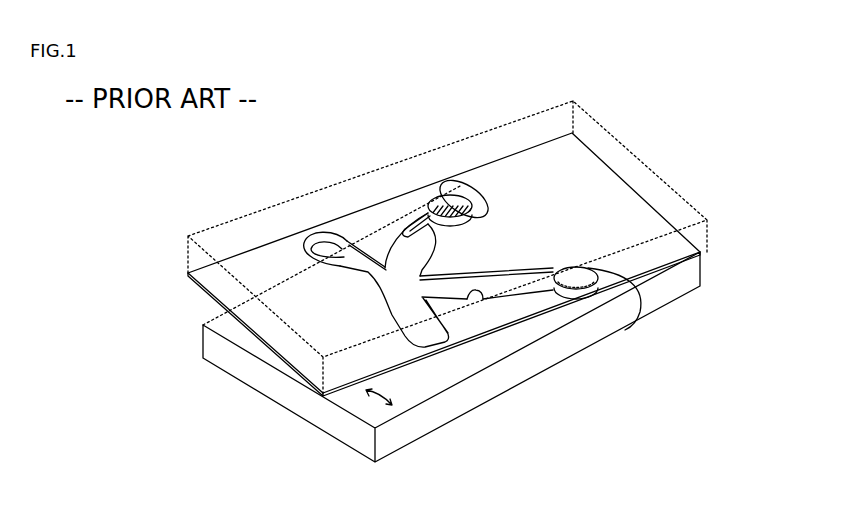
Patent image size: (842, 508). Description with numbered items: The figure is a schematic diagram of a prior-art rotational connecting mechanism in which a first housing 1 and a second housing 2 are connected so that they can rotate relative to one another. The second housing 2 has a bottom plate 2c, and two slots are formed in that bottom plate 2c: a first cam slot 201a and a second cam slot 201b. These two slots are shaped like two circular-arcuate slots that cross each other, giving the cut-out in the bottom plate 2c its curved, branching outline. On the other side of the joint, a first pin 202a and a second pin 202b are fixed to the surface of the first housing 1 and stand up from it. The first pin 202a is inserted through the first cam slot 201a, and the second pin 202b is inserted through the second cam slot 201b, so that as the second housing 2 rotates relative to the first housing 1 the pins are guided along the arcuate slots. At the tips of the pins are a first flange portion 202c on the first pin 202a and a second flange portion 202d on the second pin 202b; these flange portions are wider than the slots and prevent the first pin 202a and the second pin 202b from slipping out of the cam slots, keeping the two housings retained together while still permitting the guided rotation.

The first housing 1 is at (443, 408).
The second housing 2 is at (323, 187).
The bottom plate 2c is at (196, 281).
The first cam slot 201a is at (427, 213).
The second cam slot 201b is at (484, 300).
The first pin 202a is at (458, 195).
The second pin 202b is at (597, 300).
The first flange portion 202c is at (440, 194).
The second flange portion 202d is at (641, 315).